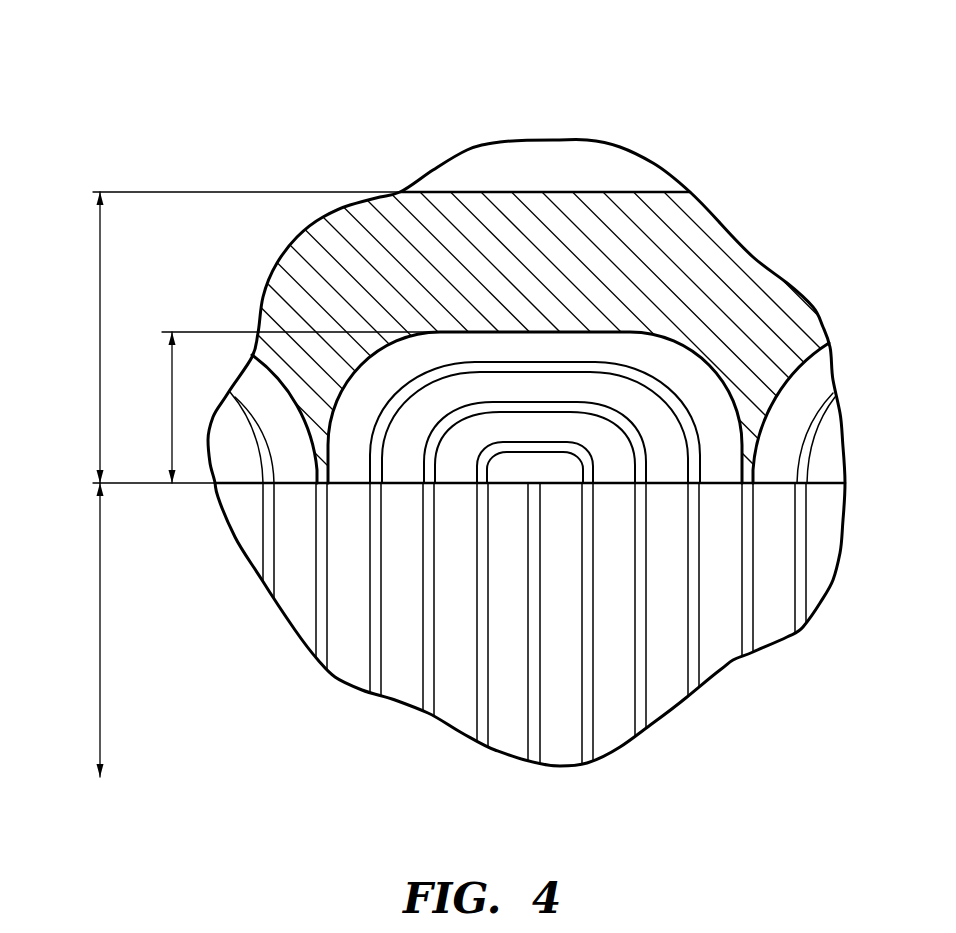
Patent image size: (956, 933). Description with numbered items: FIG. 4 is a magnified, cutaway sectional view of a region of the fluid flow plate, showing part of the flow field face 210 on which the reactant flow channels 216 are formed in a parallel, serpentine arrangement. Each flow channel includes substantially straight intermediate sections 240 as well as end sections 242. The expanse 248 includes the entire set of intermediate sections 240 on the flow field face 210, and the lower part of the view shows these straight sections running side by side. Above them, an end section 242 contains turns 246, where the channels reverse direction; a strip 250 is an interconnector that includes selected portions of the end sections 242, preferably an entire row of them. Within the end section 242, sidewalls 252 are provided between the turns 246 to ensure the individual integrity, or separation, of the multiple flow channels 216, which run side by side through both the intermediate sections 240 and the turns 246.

The flow field face 210 is at (710, 108).
The reactant flow channels 216 is at (725, 530).
The intermediate sections 240 is at (719, 647).
The end sections 242 is at (172, 400).
The turns 246 is at (598, 445).
The expanse 248 is at (100, 610).
The strips 250 is at (100, 362).
The sidewalls 252 is at (520, 445).